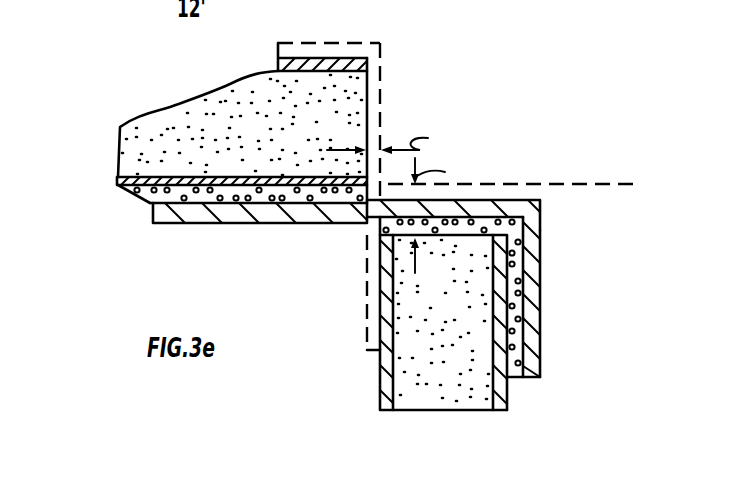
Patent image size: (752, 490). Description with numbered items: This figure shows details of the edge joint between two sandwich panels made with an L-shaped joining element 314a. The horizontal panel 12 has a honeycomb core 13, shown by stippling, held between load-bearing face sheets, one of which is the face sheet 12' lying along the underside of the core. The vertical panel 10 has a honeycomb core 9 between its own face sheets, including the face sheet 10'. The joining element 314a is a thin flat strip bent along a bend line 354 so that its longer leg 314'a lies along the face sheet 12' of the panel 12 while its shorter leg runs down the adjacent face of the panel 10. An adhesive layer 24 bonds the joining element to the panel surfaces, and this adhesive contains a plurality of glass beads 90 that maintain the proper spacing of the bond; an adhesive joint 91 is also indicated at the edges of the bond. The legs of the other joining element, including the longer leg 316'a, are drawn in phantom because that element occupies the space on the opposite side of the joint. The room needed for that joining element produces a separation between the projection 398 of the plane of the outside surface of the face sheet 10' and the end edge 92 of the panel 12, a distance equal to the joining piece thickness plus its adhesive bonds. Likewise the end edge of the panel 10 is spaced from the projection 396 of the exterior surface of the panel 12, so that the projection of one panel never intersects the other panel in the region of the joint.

The honeycomb core 13 is at (123, 132).
The sandwich panel 12 is at (217, 119).
The load-bearing face sheet 12' is at (108, 227).
The adhesive layer 24 is at (193, 194).
The longer leg of joining element 314'a is at (260, 248).
The adhesive joint 91 is at (142, 199).
The panel end edge 92 is at (381, 118).
The projection of face sheet plane 398 is at (376, 97).
The projection of exterior surface 396 is at (603, 182).
The longer leg of joining element 316'a is at (328, 292).
The bend line 354 is at (542, 202).
The joining element 314a is at (542, 232).
The glass beads 90 is at (450, 238).
The honeycomb core 9 is at (403, 363).
The sandwich panel 10 is at (443, 344).
The face sheet 10' is at (353, 331).